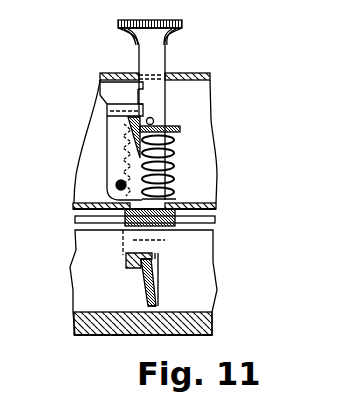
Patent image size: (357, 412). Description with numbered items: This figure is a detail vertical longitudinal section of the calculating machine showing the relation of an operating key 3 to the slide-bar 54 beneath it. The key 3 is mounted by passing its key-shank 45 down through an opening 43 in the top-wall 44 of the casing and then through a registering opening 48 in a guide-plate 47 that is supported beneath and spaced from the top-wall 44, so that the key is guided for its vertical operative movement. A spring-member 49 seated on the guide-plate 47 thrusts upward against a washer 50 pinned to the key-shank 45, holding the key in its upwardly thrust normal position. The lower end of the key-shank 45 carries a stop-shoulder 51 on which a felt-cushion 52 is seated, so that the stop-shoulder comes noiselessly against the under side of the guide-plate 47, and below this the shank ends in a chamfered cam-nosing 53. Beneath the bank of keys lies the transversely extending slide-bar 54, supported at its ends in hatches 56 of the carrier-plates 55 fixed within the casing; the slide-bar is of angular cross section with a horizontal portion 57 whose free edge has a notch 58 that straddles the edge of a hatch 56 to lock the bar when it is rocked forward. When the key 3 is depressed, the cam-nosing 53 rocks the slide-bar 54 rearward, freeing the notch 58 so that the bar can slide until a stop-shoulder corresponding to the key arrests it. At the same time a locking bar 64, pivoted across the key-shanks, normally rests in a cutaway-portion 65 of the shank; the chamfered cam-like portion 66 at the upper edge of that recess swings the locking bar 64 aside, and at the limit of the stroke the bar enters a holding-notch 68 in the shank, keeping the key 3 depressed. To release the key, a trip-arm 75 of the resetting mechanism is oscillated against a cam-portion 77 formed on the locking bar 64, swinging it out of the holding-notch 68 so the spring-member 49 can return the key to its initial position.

The key 3 is at (162, 20).
The opening 43 is at (138, 73).
The top-wall 44 is at (188, 75).
The key-shank 45 is at (157, 63).
The guide-plate 47 is at (197, 203).
The opening 48 is at (123, 214).
The spring-member 49 is at (170, 140).
The washer 50 is at (172, 127).
The stop-shoulder 51 is at (215, 222).
The felt-cushion 52 is at (188, 197).
The cam-nosing 53 is at (161, 243).
The slide-bar 54 is at (158, 275).
The carrier-plate 55 is at (211, 278).
The hatch 56 is at (146, 282).
The horizontal portion 57 is at (133, 256).
The notch 58 is at (142, 266).
The locking bar 64 is at (107, 122).
The cutaway-portion 65 is at (143, 110).
The cam-like portion 66 is at (100, 88).
The holding-notch 68 is at (118, 73).
The trip-arm 75 is at (125, 140).
The cam-portion 77 is at (118, 112).